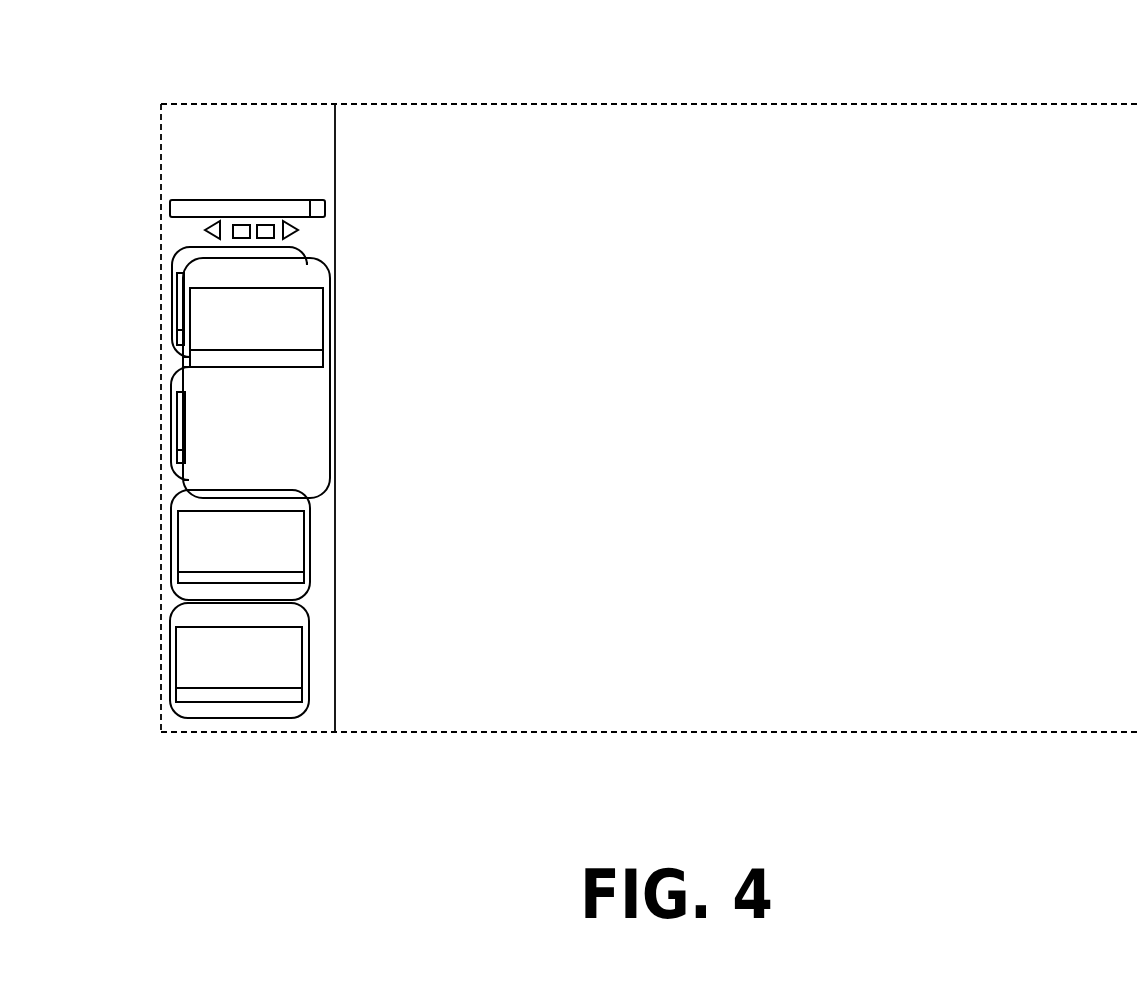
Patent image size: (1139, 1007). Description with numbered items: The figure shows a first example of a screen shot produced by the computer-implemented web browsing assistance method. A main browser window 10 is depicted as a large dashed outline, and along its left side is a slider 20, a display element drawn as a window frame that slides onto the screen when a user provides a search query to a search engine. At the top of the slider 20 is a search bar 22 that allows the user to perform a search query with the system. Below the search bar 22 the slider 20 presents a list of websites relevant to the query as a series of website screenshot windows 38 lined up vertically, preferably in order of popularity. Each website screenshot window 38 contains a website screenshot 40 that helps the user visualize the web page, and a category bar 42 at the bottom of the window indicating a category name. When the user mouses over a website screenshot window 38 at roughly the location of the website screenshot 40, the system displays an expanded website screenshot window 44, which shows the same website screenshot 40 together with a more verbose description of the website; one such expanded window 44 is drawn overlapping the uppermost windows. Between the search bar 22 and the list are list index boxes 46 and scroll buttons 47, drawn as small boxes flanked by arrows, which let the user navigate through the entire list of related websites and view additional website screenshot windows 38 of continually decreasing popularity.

The main browser window 10 is at (413, 83).
The slider 20 is at (233, 133).
The search bar 22 is at (203, 199).
The website screenshot window 38 is at (172, 275).
The website screenshot 40 is at (176, 298).
The category bar 42 is at (178, 341).
The expanded website screenshot window 44 is at (315, 260).
The list index box 46 is at (238, 224).
The scroll button 47 is at (210, 233).